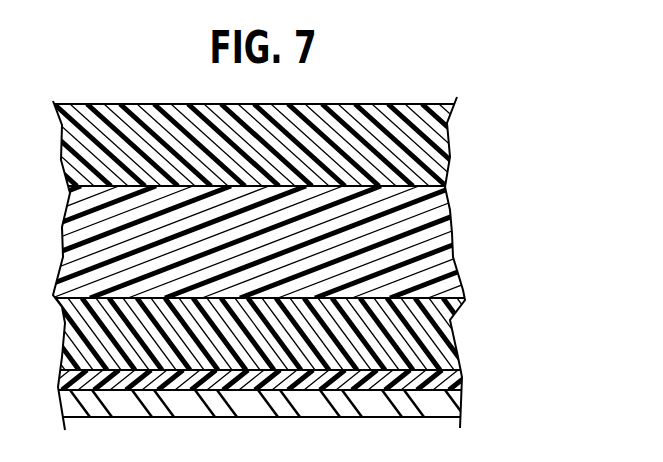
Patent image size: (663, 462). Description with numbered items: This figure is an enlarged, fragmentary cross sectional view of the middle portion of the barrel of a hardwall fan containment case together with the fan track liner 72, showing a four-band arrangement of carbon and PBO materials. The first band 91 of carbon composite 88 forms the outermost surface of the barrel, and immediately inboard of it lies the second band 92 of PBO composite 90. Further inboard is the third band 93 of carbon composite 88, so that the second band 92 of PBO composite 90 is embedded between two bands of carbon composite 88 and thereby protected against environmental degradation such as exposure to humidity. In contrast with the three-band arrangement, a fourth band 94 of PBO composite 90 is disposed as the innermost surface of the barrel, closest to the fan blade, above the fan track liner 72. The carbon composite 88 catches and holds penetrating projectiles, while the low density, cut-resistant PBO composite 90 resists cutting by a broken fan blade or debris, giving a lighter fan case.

The fan track liner 72 is at (443, 408).
The carbon fiber composite 88 is at (450, 110).
The PBO composite 90 is at (440, 203).
The first band 91 is at (455, 134).
The second band 92 is at (455, 224).
The third band 93 is at (457, 334).
The fourth band 94 is at (462, 373).